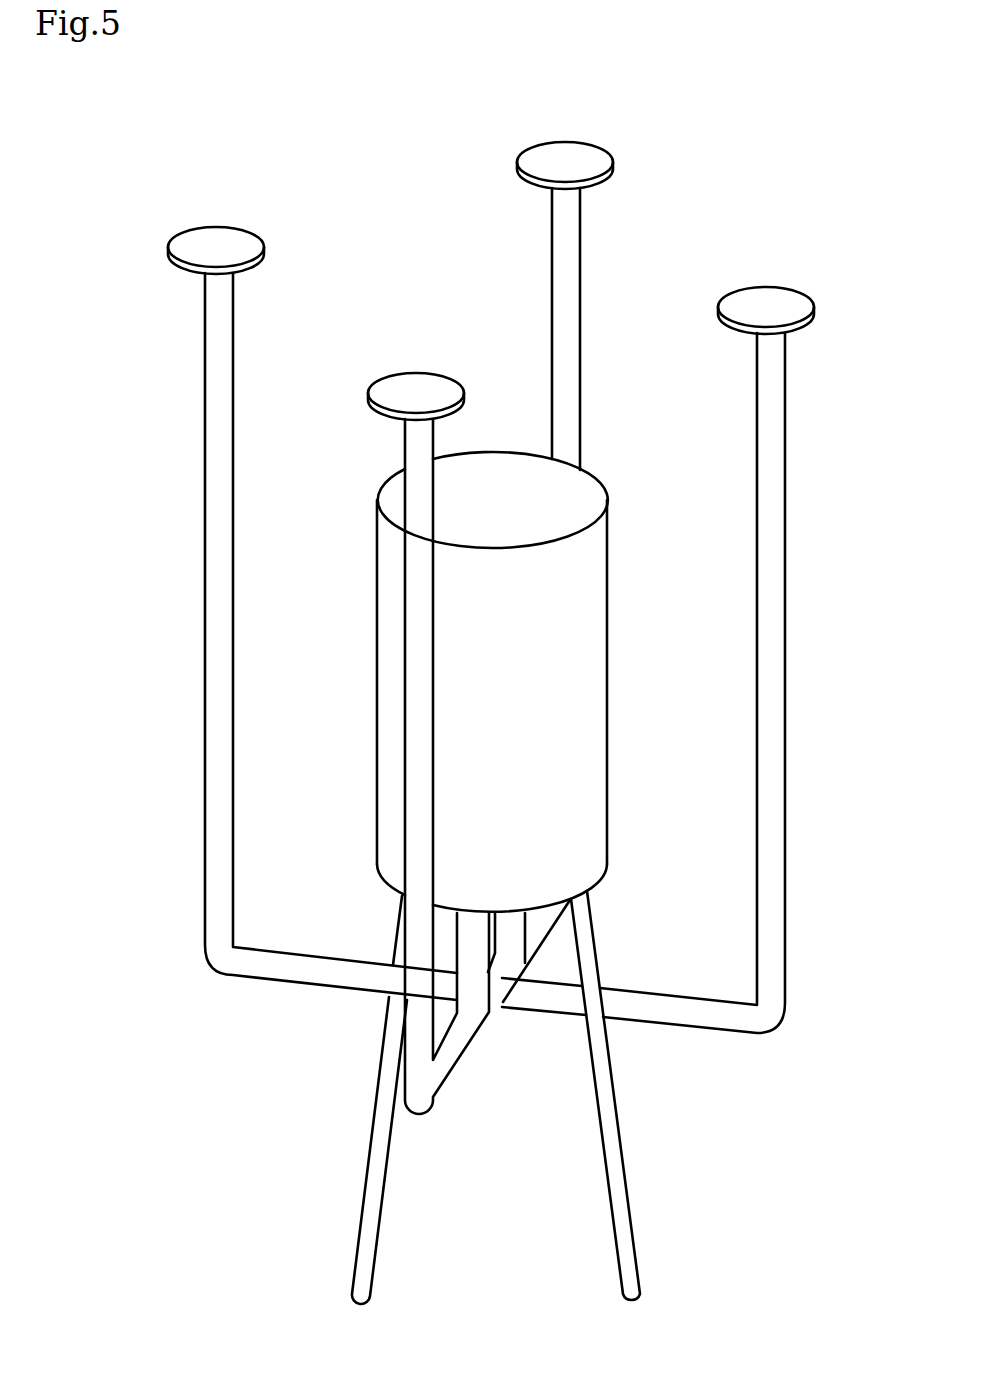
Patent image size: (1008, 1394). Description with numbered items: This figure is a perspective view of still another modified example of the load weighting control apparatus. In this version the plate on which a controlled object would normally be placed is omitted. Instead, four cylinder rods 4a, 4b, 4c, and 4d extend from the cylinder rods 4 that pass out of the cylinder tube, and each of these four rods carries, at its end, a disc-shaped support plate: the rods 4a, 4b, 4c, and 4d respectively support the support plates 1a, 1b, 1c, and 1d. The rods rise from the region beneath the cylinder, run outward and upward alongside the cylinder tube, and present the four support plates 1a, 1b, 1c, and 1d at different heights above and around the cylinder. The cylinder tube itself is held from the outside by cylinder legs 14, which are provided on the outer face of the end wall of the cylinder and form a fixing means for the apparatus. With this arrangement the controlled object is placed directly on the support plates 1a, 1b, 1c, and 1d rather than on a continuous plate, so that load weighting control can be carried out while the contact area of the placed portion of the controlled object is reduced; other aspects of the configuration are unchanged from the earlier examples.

The support plate 1a is at (775, 300).
The support plate 1b is at (573, 155).
The support plate 1c is at (225, 240).
The support plate 1d is at (425, 385).
The cylinder rods 4 is at (512, 942).
The cylinder rod 4a is at (772, 622).
The cylinder rod 4b is at (572, 418).
The cylinder rod 4c is at (218, 678).
The cylinder rod 4d is at (417, 777).
The cylinder legs 14 is at (372, 1227).